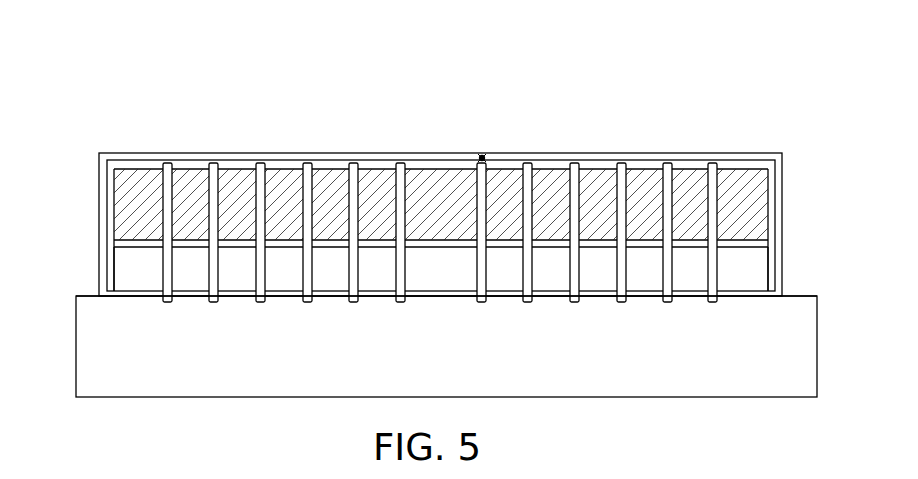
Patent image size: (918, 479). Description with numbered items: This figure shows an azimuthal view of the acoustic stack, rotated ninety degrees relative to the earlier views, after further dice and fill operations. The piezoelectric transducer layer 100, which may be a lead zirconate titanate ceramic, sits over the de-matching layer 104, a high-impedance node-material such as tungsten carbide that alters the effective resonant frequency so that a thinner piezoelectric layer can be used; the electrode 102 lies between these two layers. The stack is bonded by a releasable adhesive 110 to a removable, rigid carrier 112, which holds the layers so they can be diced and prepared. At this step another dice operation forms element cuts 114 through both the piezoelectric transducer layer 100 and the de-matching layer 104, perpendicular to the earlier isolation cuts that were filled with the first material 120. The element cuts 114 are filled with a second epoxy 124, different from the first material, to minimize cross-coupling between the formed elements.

The piezoelectric transducer layer 100 is at (126, 172).
The electrode 102 is at (118, 243).
The de-matching layer 104 is at (760, 268).
The releasable adhesive 110 is at (760, 297).
The carrier 112 is at (92, 332).
The element cuts 114 is at (483, 157).
The first material 120 is at (187, 168).
The second epoxy 124 is at (400, 162).